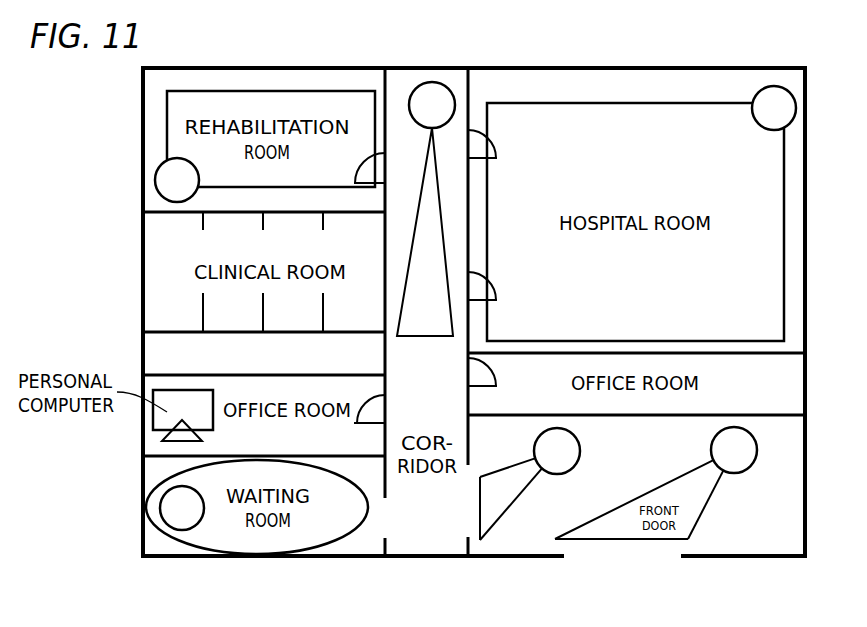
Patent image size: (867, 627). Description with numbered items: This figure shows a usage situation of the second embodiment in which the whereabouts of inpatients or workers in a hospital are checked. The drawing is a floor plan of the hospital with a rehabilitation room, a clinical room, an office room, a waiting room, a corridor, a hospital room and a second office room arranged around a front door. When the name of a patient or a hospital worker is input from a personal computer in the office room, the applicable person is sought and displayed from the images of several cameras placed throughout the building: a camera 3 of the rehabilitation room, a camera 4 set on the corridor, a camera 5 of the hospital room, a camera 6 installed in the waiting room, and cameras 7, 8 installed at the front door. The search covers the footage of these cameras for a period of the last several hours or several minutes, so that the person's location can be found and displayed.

The camera of a rehabilitation room 3 is at (177, 180).
The camera set on a corridor 4 is at (426, 209).
The camera of a hospital room 5 is at (774, 108).
The camera installed in a waiting room 6 is at (183, 515).
The camera installed at the front door 7 is at (530, 484).
The camera installed at the front door 8 is at (656, 483).